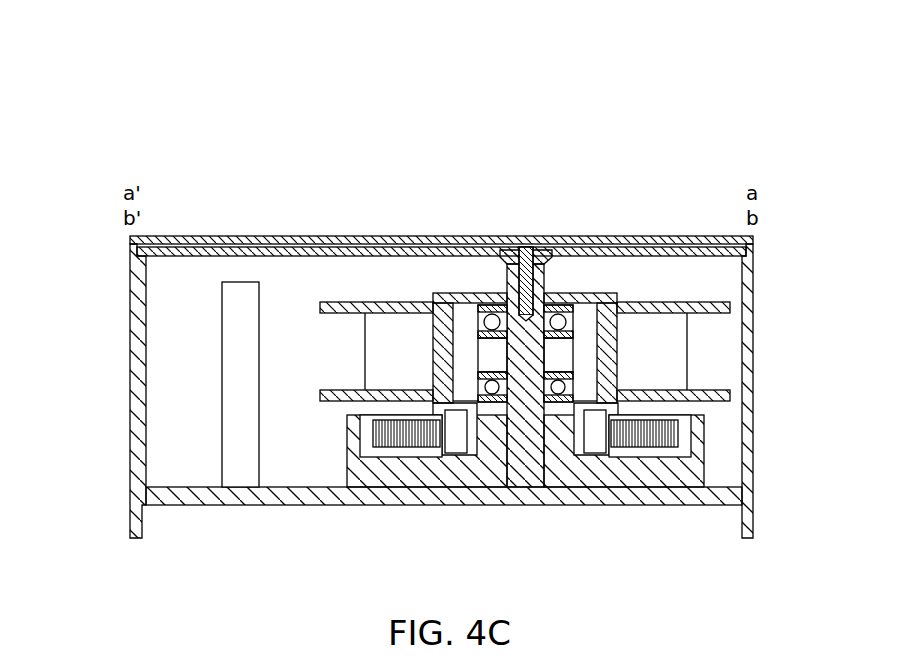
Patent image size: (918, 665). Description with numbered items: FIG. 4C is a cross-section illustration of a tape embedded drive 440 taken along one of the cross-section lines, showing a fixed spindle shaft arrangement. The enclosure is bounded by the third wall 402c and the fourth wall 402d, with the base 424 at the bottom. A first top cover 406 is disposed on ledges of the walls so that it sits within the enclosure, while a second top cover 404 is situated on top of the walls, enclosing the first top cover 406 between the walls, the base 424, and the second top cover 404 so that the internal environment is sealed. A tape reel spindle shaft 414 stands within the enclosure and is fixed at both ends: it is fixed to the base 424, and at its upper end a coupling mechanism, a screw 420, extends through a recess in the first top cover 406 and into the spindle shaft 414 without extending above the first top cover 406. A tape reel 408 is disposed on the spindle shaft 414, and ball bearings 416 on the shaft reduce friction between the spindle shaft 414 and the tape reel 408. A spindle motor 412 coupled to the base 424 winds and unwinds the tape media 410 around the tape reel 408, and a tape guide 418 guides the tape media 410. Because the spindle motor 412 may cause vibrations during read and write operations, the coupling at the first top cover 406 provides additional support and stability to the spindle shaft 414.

The motor assembly 440 is at (239, 118).
The second top cover 404 is at (212, 235).
The first top cover 406 is at (172, 261).
The fourth wall 402d is at (128, 404).
The third wall 402c is at (756, 469).
The base 424 is at (200, 507).
The tape guide 418 is at (219, 332).
The tape reel 408 is at (327, 409).
The spindle motor 412 is at (405, 456).
The tape media 410 is at (396, 324).
The tape reel spindle shaft 414 is at (527, 489).
The screw 420 is at (520, 249).
The ball bearings 416 is at (476, 326).